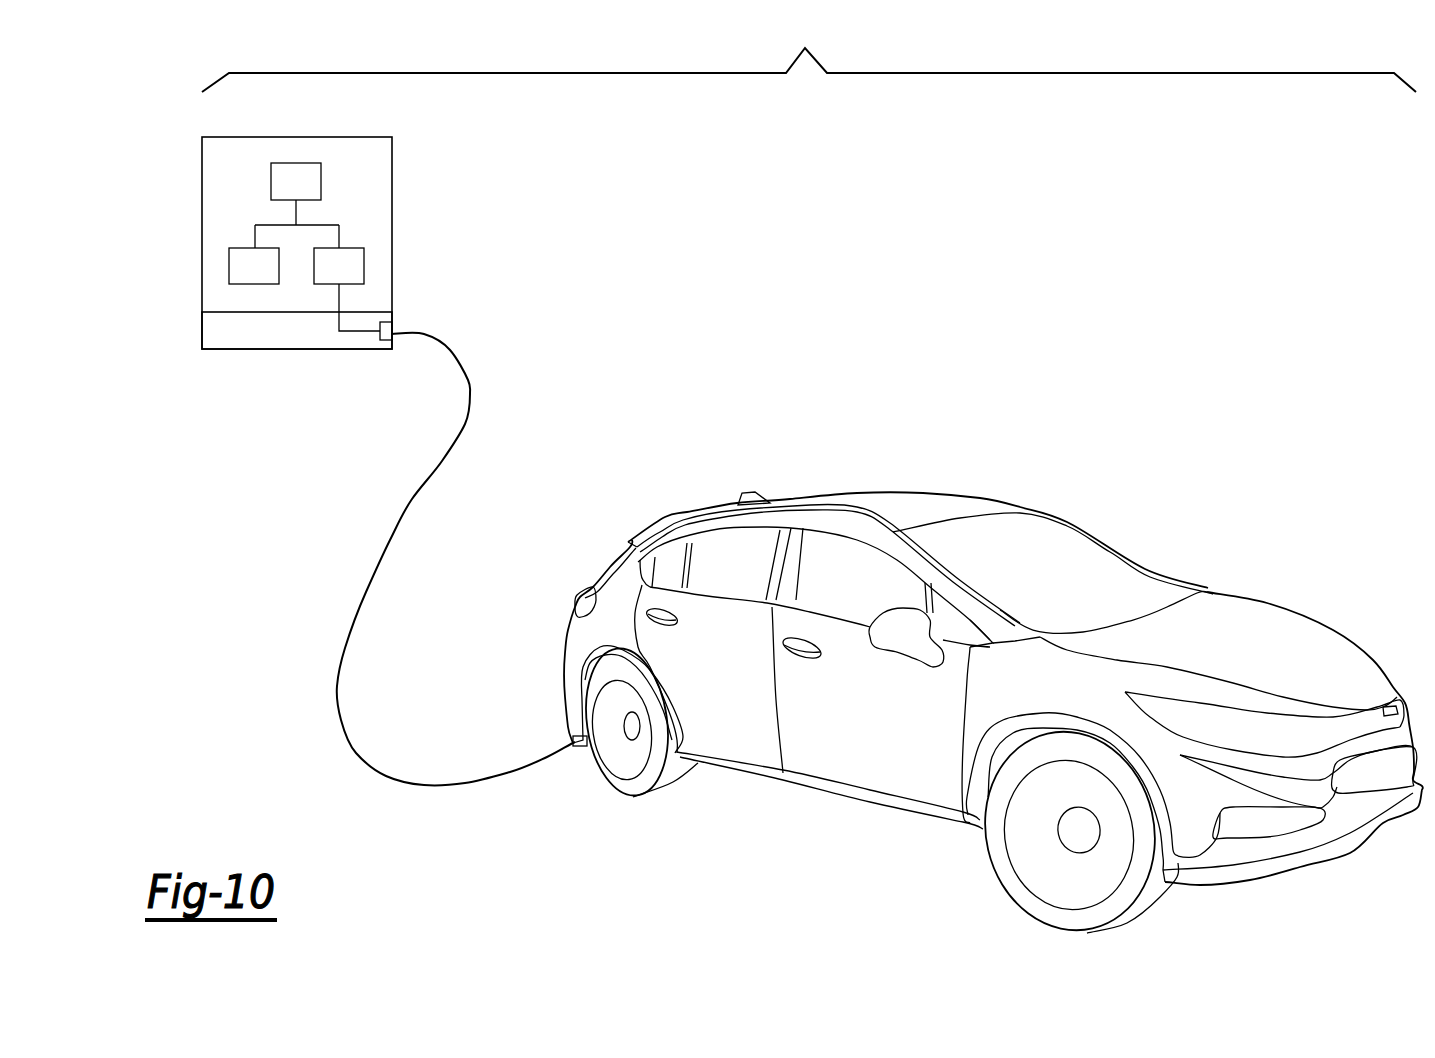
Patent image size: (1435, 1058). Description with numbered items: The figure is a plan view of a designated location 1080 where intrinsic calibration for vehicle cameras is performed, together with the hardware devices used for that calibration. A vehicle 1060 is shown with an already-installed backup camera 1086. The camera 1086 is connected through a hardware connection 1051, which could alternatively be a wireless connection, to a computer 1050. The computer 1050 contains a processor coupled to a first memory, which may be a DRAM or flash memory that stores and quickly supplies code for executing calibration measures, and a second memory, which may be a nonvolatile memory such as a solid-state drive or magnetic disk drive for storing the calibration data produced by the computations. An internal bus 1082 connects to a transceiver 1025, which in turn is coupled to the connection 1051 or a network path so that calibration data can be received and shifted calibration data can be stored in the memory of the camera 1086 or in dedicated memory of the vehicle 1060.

The designated location 1080 is at (809, 53).
The computer 1050 is at (203, 189).
The transceiver 1025 is at (203, 332).
The internal bus 1082 is at (360, 331).
The hardware connection 1051 is at (360, 758).
The backup camera 1086 is at (572, 742).
The vehicle 1060 is at (979, 499).